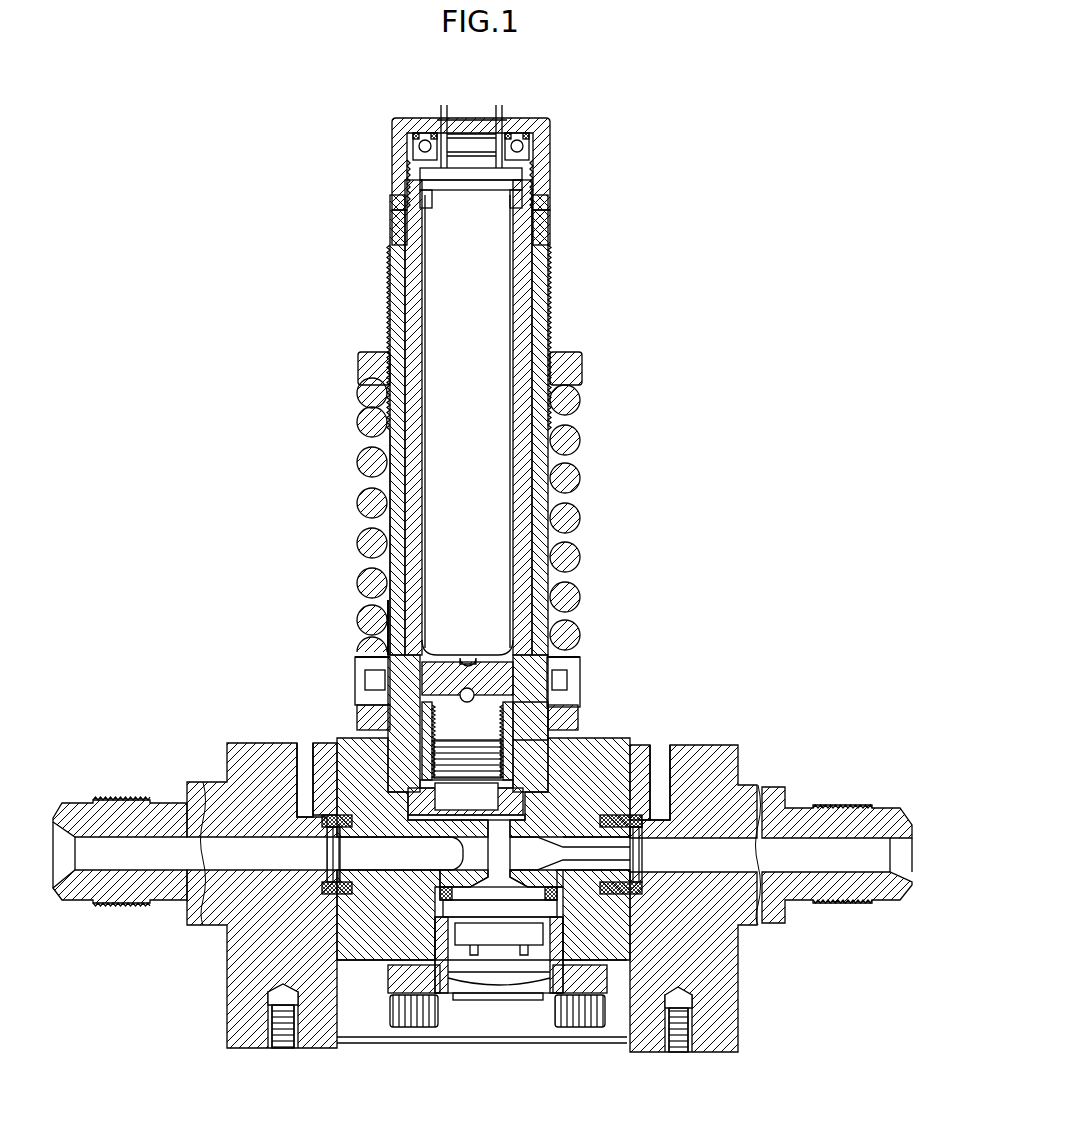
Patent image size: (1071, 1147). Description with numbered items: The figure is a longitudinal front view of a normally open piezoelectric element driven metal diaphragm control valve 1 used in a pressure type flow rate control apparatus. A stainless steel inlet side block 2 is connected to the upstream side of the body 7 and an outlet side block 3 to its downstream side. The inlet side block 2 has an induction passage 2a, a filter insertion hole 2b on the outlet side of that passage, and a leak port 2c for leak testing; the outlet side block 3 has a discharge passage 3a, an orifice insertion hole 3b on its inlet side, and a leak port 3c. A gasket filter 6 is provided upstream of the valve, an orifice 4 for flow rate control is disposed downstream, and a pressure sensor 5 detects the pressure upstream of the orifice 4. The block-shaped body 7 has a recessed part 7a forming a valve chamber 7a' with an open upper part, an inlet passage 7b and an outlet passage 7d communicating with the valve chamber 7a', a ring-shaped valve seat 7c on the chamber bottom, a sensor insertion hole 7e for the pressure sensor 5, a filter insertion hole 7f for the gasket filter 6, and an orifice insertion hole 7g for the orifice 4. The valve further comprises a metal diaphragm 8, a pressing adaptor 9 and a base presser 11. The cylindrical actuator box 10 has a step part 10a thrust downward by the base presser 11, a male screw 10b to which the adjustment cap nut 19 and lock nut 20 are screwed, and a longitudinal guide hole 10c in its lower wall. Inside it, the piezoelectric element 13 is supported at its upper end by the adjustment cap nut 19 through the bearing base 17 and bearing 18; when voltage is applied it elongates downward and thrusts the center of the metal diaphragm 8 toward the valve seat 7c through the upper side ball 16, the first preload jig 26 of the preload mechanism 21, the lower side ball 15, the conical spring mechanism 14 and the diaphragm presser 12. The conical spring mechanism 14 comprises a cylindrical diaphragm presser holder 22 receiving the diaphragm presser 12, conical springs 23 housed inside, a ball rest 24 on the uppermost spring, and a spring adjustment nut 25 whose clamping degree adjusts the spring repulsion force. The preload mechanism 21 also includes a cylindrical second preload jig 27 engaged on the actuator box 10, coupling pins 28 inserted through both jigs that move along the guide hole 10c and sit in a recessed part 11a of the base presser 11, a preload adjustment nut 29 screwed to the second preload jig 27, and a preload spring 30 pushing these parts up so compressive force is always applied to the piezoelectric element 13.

The piezoelectric element driven metal diaphragm control valve 1 is at (690, 456).
The inlet side block 2 is at (195, 877).
The induction passage 2a is at (162, 858).
The filter insertion hole 2b is at (282, 918).
The leak port 2c is at (305, 790).
The outlet side block 3 is at (771, 879).
The discharge passage 3a is at (790, 858).
The orifice insertion hole 3b is at (650, 905).
The leak port 3c is at (660, 790).
The orifice 4 is at (647, 853).
The pressure sensor 5 is at (470, 910).
The gasket filter 6 is at (322, 853).
The body 7 is at (481, 900).
The recessed part 7a is at (478, 788).
The valve chamber 7a' is at (457, 853).
The inlet passage 7b is at (388, 950).
The valve seat 7c is at (470, 812).
The outlet passage 7d is at (530, 920).
The sensor insertion hole 7e is at (440, 920).
The filter insertion hole 7f is at (335, 810).
The orifice insertion hole 7g is at (610, 975).
The metal diaphragm 8 is at (499, 828).
The pressing adaptor 9 is at (622, 785).
The actuator box 10 is at (468, 493).
The step part 10a is at (384, 716).
The male screw 10b is at (542, 262).
The longitudinal guide hole 10c is at (372, 616).
The base presser 11 is at (593, 666).
The recessed part 11a is at (560, 668).
The diaphragm presser 12 is at (499, 1002).
The piezoelectric element 13 is at (468, 318).
The conical spring mechanism 14 is at (467, 647).
The down side ball 15 is at (461, 658).
The up side ball 16 is at (470, 688).
The bearing base 17 is at (540, 175).
The bearing 18 is at (522, 150).
The adjustment cap nut 19 is at (400, 178).
The lock nut 20 is at (396, 233).
The preload mechanism 21 is at (424, 515).
The diaphragm presser holder 22 is at (552, 712).
The conical springs 23 is at (452, 700).
The ball rest 24 is at (372, 685).
The spring adjustment nut 25 is at (505, 665).
The No. 1 preload jig 26 is at (520, 640).
The No. 2 preload jig 27 is at (394, 566).
The coupling pins 28 is at (380, 672).
The preload adjustment nut 29 is at (372, 366).
The preload spring 30 is at (372, 425).